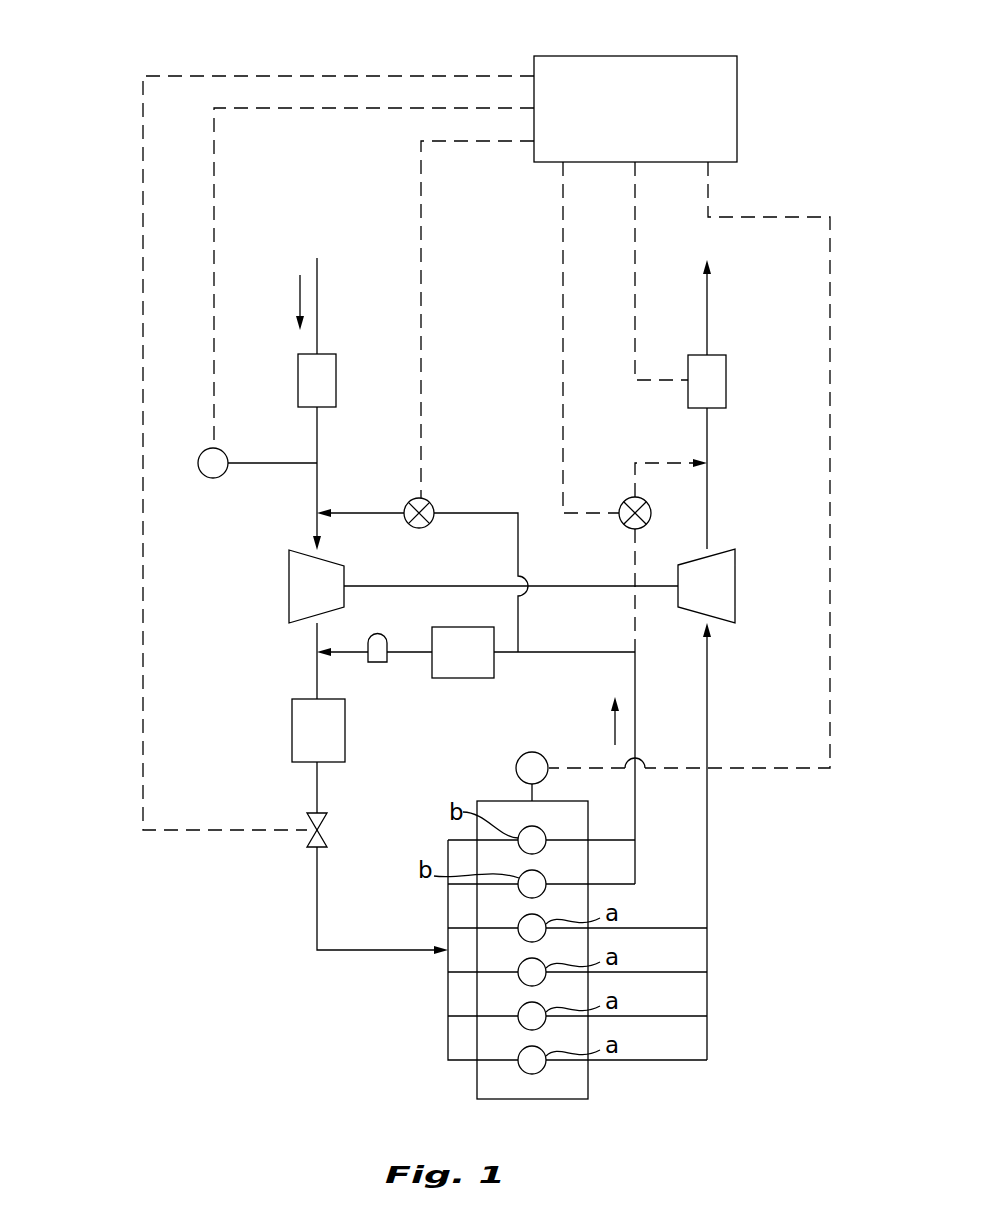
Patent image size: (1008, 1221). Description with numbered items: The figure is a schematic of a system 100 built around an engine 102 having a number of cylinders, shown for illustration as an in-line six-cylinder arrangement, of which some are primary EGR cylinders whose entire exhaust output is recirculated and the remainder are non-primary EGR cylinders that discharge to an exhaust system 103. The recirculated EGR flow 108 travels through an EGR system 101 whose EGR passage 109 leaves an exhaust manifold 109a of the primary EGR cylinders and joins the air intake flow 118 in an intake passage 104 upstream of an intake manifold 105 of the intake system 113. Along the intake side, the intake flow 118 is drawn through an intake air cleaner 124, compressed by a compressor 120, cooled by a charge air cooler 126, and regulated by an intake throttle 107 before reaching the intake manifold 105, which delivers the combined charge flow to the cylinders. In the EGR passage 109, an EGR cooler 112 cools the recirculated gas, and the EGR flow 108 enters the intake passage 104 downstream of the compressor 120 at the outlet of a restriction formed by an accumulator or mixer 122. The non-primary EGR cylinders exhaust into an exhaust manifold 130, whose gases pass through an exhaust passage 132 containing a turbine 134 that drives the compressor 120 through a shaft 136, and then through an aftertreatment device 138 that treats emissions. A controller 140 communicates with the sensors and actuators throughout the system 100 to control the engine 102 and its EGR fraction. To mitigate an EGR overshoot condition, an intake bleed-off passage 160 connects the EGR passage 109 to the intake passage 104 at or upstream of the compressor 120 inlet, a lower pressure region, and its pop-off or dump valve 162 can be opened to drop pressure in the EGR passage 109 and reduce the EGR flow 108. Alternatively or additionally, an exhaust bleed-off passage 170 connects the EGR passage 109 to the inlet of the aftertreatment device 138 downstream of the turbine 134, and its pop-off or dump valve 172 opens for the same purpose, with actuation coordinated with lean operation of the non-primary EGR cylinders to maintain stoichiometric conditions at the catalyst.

The system 100 is at (112, 1048).
The EGR system 101 is at (464, 703).
The engine 102 is at (540, 1113).
The exhaust system 103 is at (806, 861).
The intake passage 104 is at (315, 636).
The intake manifold 105 is at (447, 1030).
The intake throttle 107 is at (307, 840).
The EGR flow 108 is at (614, 718).
The EGR passage 109 is at (634, 733).
The exhaust manifold of primary EGR cylinders 109a is at (636, 872).
The EGR cooler 112 is at (470, 678).
The intake system 113 is at (307, 981).
The intake flow 118 is at (300, 290).
The compressor 120 is at (310, 550).
The accumulator or mixer 122 is at (376, 662).
The intake air cleaner 124 is at (336, 380).
The charge air cooler 126 is at (290, 735).
The exhaust manifold 130 is at (708, 1025).
The exhaust passage 132 is at (708, 810).
The turbine 134 is at (735, 578).
The shaft 136 is at (458, 586).
The aftertreatment device 138 is at (726, 385).
The controller 140 is at (737, 92).
The intake bleed-off passage 160 is at (495, 513).
The pop-off or dump valve 162 is at (429, 500).
The exhaust bleed-off passage 170 is at (635, 568).
The pop-off or dump valve 172 is at (622, 500).